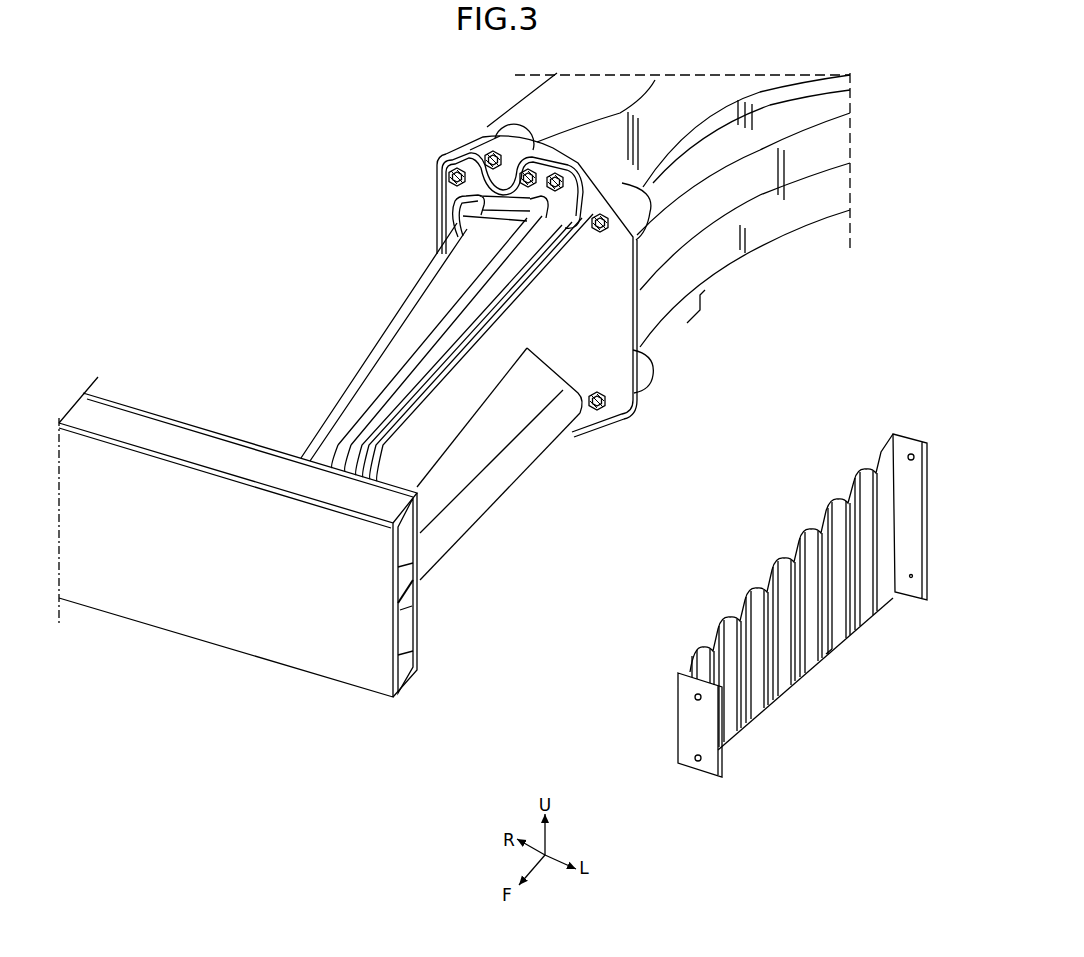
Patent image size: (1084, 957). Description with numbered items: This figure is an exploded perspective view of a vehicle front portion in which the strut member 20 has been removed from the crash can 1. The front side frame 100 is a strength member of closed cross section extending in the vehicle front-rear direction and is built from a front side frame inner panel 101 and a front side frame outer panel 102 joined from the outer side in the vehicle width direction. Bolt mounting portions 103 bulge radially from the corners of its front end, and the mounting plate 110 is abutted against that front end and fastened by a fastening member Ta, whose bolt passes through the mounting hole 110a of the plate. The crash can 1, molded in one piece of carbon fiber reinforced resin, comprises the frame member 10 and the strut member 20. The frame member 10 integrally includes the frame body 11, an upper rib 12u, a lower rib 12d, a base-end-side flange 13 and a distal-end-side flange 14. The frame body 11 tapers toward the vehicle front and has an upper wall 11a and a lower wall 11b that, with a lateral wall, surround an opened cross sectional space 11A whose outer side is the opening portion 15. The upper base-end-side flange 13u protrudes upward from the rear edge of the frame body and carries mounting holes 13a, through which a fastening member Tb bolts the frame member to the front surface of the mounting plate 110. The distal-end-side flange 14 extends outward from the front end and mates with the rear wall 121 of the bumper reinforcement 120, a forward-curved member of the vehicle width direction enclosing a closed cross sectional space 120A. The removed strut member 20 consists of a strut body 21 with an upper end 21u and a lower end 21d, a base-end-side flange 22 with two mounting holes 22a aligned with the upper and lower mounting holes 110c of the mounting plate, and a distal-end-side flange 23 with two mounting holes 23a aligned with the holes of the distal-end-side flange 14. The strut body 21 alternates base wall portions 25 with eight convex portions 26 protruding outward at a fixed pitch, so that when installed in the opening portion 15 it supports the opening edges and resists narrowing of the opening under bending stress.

The crash can 1 is at (441, 353).
The frame member 10 is at (441, 353).
The frame body 11 is at (434, 401).
The upper wall 11a is at (407, 343).
The opened cross sectional space 11A is at (452, 424).
The lower wall 11b is at (445, 487).
The upper rib 12u is at (517, 273).
The lower rib 12d is at (517, 480).
The base-end-side flange 13 is at (464, 192).
The upper base-end-side flange 13u is at (464, 192).
The mounting hole 13a is at (433, 175).
The distal-end-side flange 14 is at (392, 478).
The opening portion 15 is at (533, 440).
The strut member 20 is at (792, 605).
The strut body 21 is at (799, 592).
The upper end 21u is at (807, 528).
The lower end 21d is at (856, 634).
The base-end-side flange 22 is at (919, 509).
The mounting hole 22a is at (911, 579).
The distal-end-side flange 23 is at (681, 745).
The mounting hole 23a is at (694, 697).
The base wall portion 25 is at (770, 700).
The convex portion 26 is at (822, 645).
The front side frame 100 is at (651, 236).
The front side frame inner panel 101 is at (537, 90).
The front side frame outer panel 102 is at (803, 227).
The bolt mounting portion 103 is at (507, 123).
The mounting plate 110 is at (539, 283).
The mounting hole 110a is at (480, 150).
The mounting hole 110c is at (596, 235).
The bumper reinforcement 120 is at (276, 549).
The closed cross sectional space 120A is at (420, 613).
The rear wall 121 is at (420, 595).
The fastening member Ta is at (477, 152).
The fastening member Tb is at (440, 180).